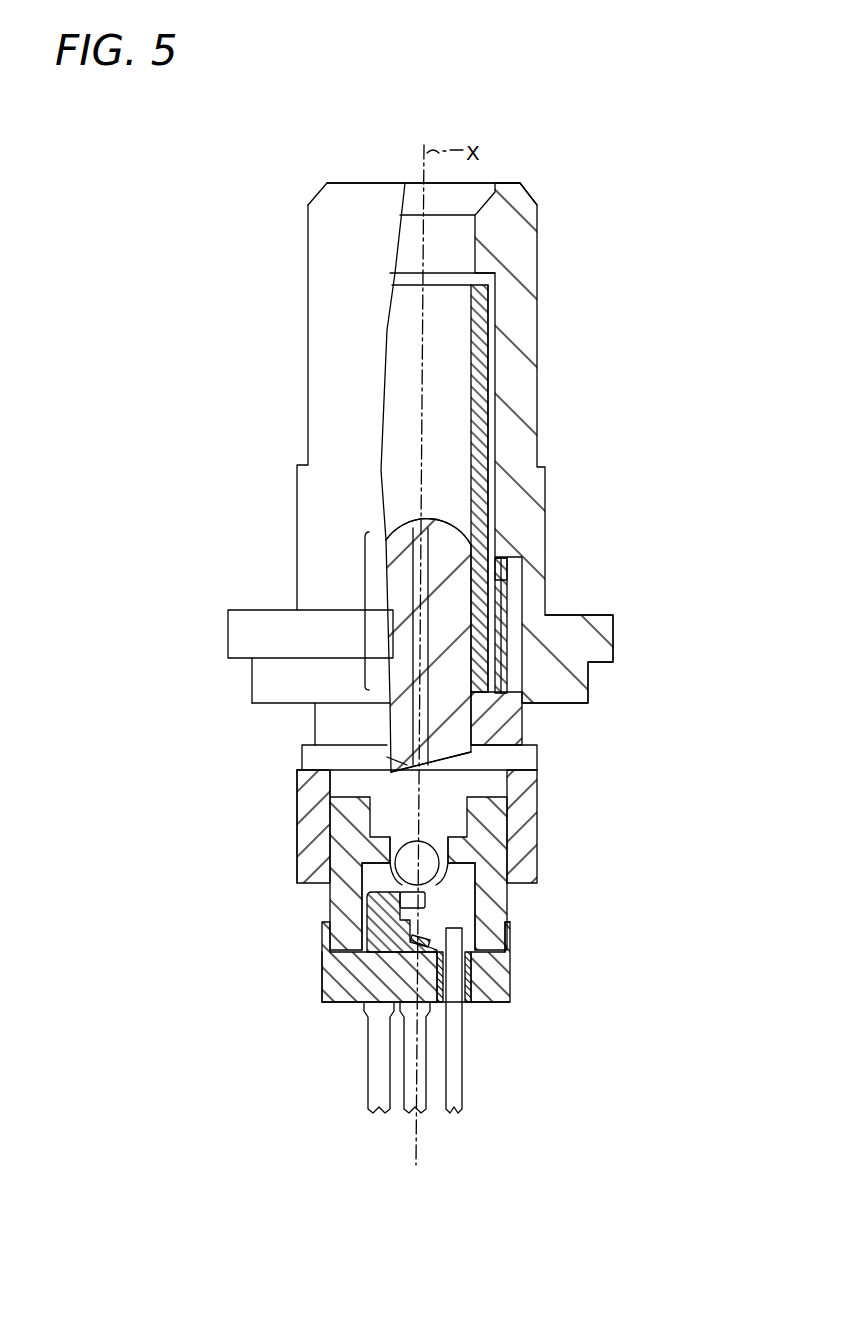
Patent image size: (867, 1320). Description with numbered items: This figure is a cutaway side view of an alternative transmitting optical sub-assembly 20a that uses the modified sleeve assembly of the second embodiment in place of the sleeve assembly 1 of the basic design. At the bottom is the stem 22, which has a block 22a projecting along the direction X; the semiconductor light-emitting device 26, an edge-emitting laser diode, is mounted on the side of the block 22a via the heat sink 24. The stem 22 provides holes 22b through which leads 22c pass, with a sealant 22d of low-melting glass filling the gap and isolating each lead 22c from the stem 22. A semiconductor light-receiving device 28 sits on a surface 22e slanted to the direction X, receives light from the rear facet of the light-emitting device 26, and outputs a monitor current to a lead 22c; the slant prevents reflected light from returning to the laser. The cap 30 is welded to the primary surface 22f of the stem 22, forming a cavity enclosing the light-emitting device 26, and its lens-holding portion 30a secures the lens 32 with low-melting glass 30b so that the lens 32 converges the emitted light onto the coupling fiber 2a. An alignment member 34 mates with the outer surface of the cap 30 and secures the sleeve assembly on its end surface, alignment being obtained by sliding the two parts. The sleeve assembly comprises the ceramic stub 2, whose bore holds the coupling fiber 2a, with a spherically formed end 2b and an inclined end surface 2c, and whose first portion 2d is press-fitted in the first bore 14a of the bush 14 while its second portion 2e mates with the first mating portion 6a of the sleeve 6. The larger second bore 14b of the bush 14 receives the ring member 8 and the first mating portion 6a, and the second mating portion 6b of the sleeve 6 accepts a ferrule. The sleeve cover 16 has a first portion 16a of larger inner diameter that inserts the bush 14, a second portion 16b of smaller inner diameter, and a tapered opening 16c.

The sleeve assembly 1 is at (517, 533).
The stub 2 is at (303, 497).
The coupling fiber 2a is at (422, 520).
The spherically formed end of the stub 2b is at (405, 528).
The inclined end surface of the stub 2c is at (387, 770).
The first portion of the stub 2d is at (363, 727).
The second portion of the stub 2e is at (390, 630).
The sleeve 6 is at (529, 483).
The first mating portion of the sleeve 6a is at (497, 557).
The second mating portion of the sleeve 6b is at (478, 375).
The ring member 8 is at (495, 578).
The bush 14 is at (497, 731).
The first bore of the bush 14a is at (540, 728).
The second bore of the bush 14b is at (472, 722).
The sleeve cover 16 is at (524, 533).
The first portion of the sleeve cover 16a is at (599, 644).
The second portion of the sleeve cover 16b is at (523, 297).
The opening of the sleeve cover 16c is at (498, 193).
The alternative sub-assembly 20a is at (616, 177).
The stem 22 is at (435, 995).
The block 22a is at (324, 978).
The holes 22b is at (470, 1007).
The leads 22c is at (416, 1046).
The sealant 22d is at (503, 1008).
The slant surface 22e is at (367, 1005).
The primary surface 22f is at (508, 950).
The heat sink 24 is at (367, 903).
The semiconductor light-emitting device 26 is at (425, 900).
The semiconductor light-receiving device 28 is at (432, 940).
The cap 30 is at (490, 860).
The lens-holding portion 30a is at (445, 850).
The low-melting glass 30b is at (460, 868).
The lens 32 is at (400, 853).
The alignment member 34 is at (523, 790).